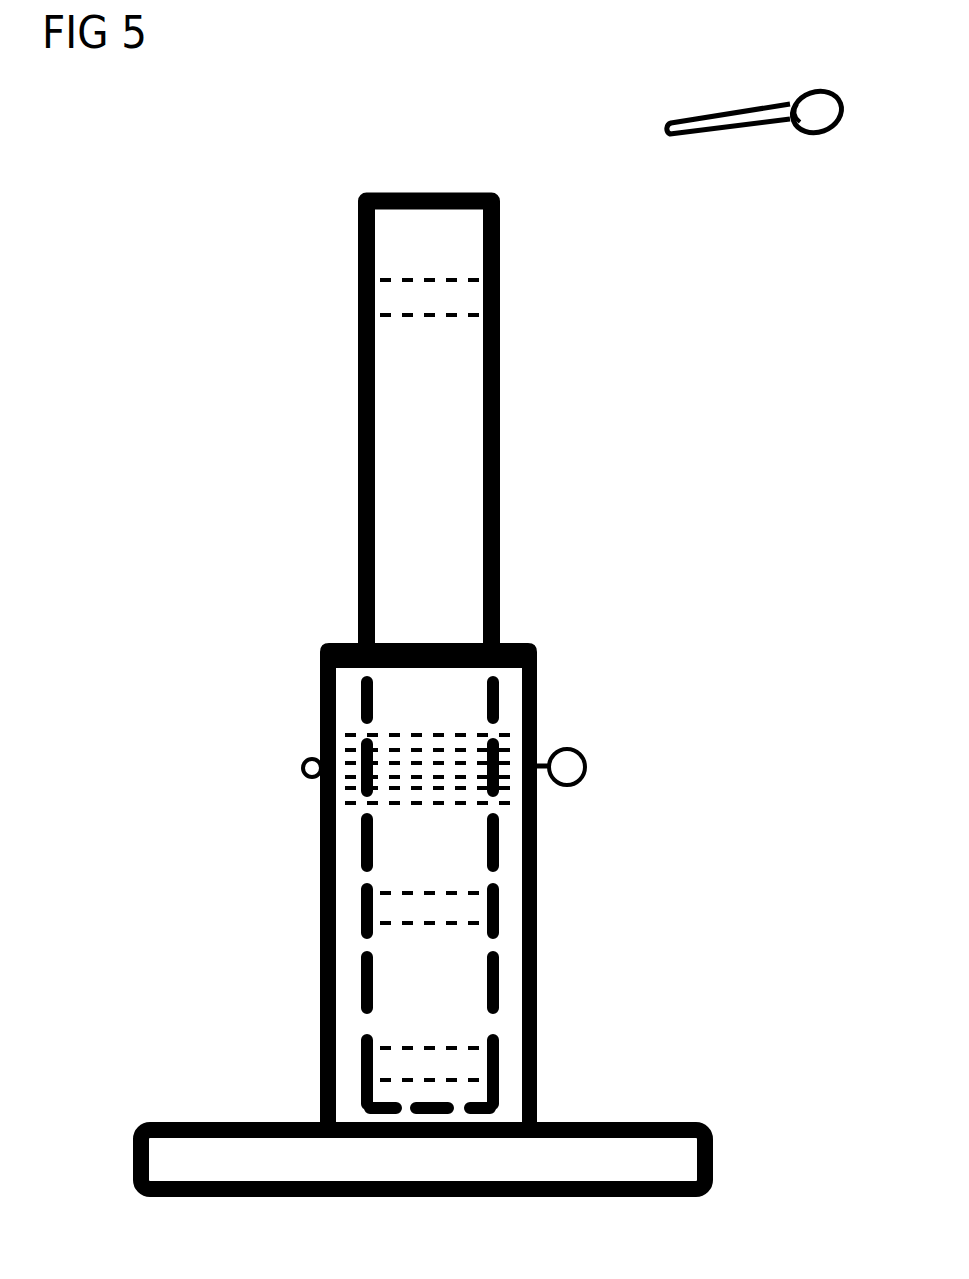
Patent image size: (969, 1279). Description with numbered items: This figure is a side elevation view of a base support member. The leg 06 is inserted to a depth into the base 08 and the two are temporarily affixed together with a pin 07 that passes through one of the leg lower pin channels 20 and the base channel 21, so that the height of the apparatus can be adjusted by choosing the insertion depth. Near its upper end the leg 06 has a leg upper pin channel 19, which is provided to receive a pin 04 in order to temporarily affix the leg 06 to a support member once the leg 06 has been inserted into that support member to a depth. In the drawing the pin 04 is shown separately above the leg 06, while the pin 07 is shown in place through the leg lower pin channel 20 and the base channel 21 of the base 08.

The pin 04 is at (728, 110).
The leg 06 is at (507, 253).
The leg upper pin channel 19 is at (405, 297).
The base 08 is at (537, 955).
The base channel 21 is at (495, 738).
The leg lower pin channel 20 is at (384, 790).
The pin 07 is at (552, 752).